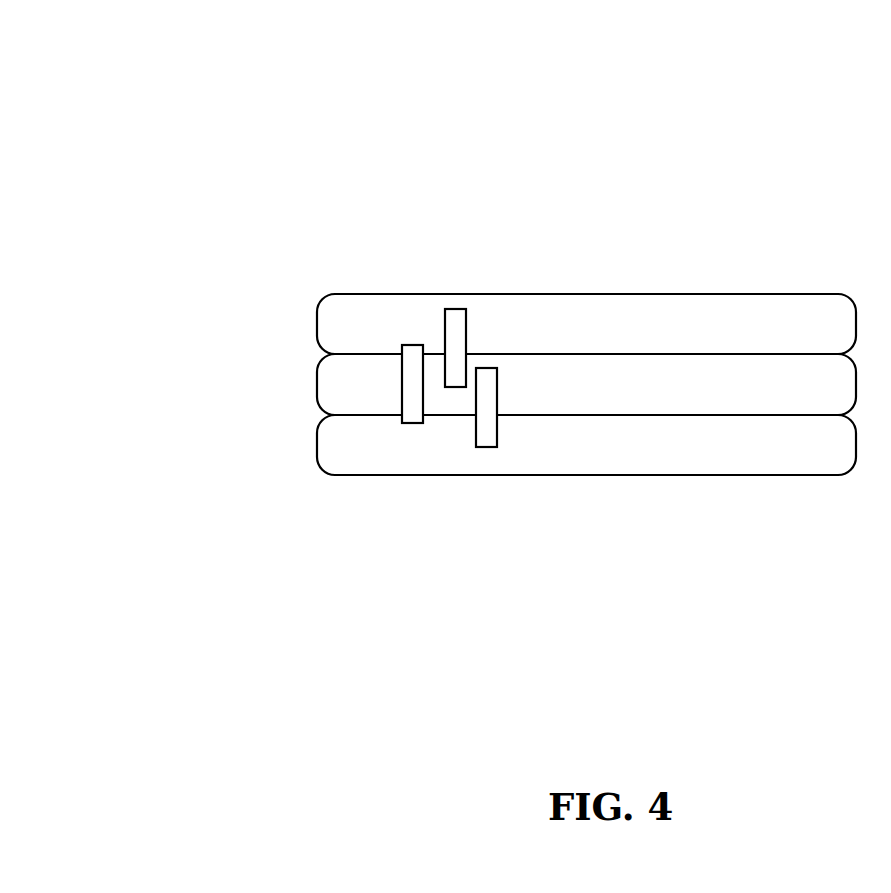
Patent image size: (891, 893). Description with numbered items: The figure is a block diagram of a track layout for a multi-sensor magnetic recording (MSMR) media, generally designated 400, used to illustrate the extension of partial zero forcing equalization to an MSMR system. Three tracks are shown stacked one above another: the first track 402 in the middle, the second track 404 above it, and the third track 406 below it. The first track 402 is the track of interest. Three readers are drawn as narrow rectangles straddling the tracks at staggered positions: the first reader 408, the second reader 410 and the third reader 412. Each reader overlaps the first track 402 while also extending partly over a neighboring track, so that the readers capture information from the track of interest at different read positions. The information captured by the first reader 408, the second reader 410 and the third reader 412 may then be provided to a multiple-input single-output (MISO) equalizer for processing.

The track layout for a MSMR media 400 is at (116, 90).
The track 1 402 is at (332, 388).
The track 2 404 is at (332, 323).
The track 3 406 is at (332, 447).
The reader 1 408 is at (402, 423).
The reader 2 410 is at (445, 309).
The reader 3 412 is at (476, 447).